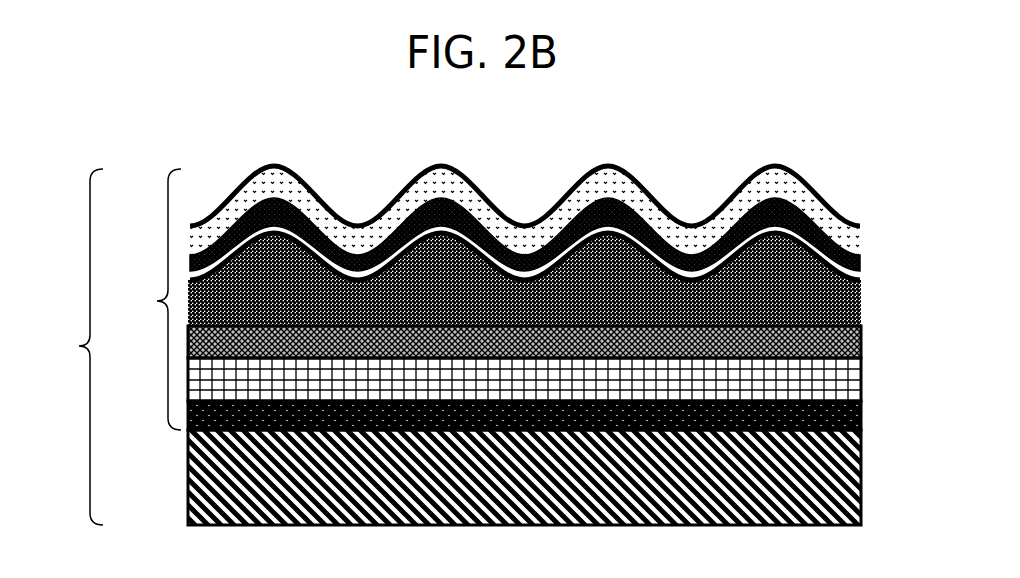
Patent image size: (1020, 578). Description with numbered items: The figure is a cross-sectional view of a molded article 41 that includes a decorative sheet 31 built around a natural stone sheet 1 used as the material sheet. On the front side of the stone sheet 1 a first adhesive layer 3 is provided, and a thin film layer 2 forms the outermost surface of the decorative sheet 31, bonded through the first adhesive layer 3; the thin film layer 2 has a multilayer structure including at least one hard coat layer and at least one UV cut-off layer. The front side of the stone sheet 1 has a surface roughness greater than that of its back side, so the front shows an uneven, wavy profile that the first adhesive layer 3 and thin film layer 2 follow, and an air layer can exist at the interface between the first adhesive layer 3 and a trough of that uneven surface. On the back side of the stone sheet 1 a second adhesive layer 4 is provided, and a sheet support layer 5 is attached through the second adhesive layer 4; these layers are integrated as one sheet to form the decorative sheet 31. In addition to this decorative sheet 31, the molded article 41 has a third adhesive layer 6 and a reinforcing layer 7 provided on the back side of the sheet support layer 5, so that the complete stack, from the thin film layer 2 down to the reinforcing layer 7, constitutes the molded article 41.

The stone sheet 1 is at (822, 293).
The thin film layer 2 is at (800, 183).
The first adhesive layer 3 is at (840, 233).
The second adhesive layer 4 is at (855, 330).
The sheet support layer 5 is at (828, 377).
The third adhesive layer 6 is at (855, 403).
The reinforcing layer 7 is at (828, 473).
The decorative sheet 31 is at (144, 299).
The molded article 41 is at (67, 347).